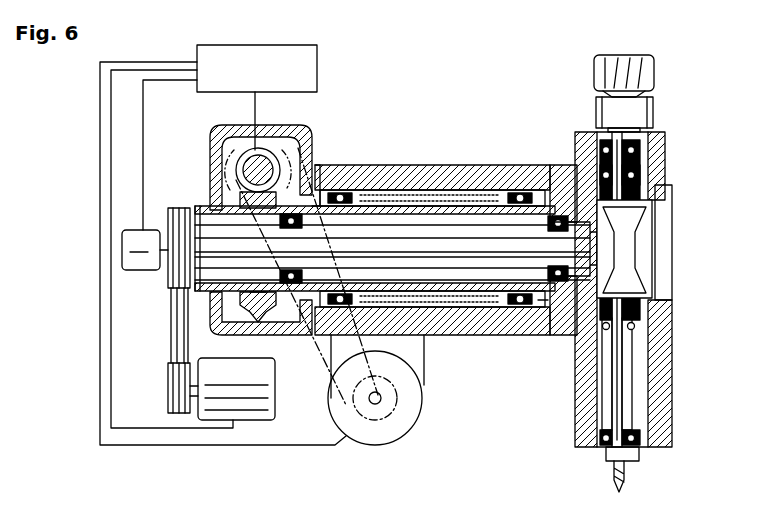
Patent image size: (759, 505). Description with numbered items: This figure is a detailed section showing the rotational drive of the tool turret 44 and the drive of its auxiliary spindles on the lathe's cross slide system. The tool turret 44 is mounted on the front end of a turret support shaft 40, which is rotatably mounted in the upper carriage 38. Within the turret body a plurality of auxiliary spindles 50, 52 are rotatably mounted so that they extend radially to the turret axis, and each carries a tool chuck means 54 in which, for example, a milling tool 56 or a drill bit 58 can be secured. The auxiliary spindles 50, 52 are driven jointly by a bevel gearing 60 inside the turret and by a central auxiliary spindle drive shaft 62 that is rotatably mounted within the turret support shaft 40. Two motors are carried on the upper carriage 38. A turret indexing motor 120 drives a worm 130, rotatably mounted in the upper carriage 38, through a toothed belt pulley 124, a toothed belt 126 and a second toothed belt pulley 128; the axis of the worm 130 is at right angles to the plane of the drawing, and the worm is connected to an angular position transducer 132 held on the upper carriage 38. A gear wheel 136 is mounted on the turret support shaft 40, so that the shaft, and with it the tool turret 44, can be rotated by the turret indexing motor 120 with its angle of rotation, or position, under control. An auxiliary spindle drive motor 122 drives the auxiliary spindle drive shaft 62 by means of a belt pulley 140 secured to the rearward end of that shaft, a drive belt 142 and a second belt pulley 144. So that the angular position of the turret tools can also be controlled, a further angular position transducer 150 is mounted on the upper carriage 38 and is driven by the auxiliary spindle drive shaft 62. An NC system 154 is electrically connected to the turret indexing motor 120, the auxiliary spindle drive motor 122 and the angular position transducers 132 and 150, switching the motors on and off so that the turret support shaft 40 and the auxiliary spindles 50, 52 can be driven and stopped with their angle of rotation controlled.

The NC system 154 is at (314, 58).
The angular position transducer 132 is at (290, 128).
The second toothed belt pulley 128 is at (312, 138).
The upper carriage 38 is at (430, 180).
The central auxiliary spindle drive shaft 62 is at (470, 238).
The milling tool 56 is at (638, 60).
The tool turret 44 is at (686, 100).
The tool chuck means 54 is at (655, 116).
The auxiliary spindle 50 is at (660, 160).
The bevel gearing 60 is at (648, 250).
The auxiliary spindle 52 is at (630, 364).
The drill bit 58 is at (628, 478).
The worm 130 is at (222, 156).
The belt pulley 140 is at (183, 207).
The further angular position transducer 150 is at (143, 272).
The drive belt 142 is at (171, 333).
The second belt pulley 144 is at (168, 386).
The gear wheel 136 is at (256, 334).
The auxiliary spindle drive motor 122 is at (269, 396).
The toothed belt 126 is at (423, 342).
The toothed belt pulley 124 is at (383, 398).
The turret indexing motor 120 is at (416, 426).
The turret support shaft 40 is at (540, 306).